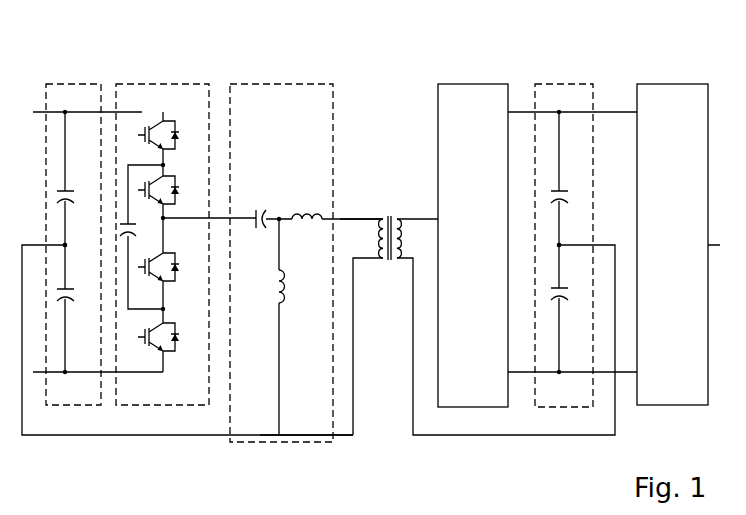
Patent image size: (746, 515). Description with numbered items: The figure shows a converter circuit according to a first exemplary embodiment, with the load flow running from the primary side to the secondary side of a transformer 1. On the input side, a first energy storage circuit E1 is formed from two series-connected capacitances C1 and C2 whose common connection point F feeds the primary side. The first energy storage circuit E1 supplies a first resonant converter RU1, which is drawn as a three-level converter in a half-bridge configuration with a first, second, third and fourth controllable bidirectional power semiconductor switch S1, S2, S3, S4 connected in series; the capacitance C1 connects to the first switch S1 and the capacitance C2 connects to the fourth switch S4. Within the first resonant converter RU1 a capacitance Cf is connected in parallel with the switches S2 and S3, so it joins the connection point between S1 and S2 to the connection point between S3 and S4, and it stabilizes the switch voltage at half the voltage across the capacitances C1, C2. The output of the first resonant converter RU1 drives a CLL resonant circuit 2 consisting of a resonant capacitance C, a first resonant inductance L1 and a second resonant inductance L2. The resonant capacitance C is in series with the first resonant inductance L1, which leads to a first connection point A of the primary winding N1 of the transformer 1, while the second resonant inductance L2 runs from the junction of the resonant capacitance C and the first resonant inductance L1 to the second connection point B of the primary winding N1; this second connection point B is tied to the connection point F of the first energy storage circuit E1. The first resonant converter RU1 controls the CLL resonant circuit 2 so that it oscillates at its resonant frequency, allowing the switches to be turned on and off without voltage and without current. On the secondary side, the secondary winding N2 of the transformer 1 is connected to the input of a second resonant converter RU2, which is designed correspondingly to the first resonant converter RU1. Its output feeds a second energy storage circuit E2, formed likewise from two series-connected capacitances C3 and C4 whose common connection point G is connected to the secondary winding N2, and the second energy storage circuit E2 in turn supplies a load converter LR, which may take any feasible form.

The transformer 1 is at (378, 148).
The CLL resonant circuit 2 is at (270, 83).
The first energy storage circuit E1 is at (72, 83).
The second energy storage circuit E2 is at (575, 83).
The first resonant converter RU1 is at (162, 83).
The second resonant converter RU2 is at (473, 245).
The load converter LR is at (672, 244).
The first controllable bidirectional power semiconductor switch S1 is at (171, 138).
The second controllable bidirectional power semiconductor switch S2 is at (171, 191).
The third controllable bidirectional power semiconductor switch S3 is at (171, 263).
The fourth controllable bidirectional power semiconductor switch S4 is at (171, 340).
The first capacitance C1 is at (76, 186).
The second capacitance C2 is at (76, 308).
The third capacitance C3 is at (569, 186).
The fourth capacitance C4 is at (569, 307).
The capacitance Cf is at (141, 237).
The resonant capacitance C is at (260, 231).
The first resonant inductance L1 is at (307, 204).
The second resonant inductance L2 is at (296, 286).
The common connection point F is at (73, 243).
The common connection point G is at (569, 234).
The first connection point A is at (361, 204).
The second connection point B is at (306, 422).
The primary winding N1 is at (378, 252).
The secondary winding N2 is at (408, 227).